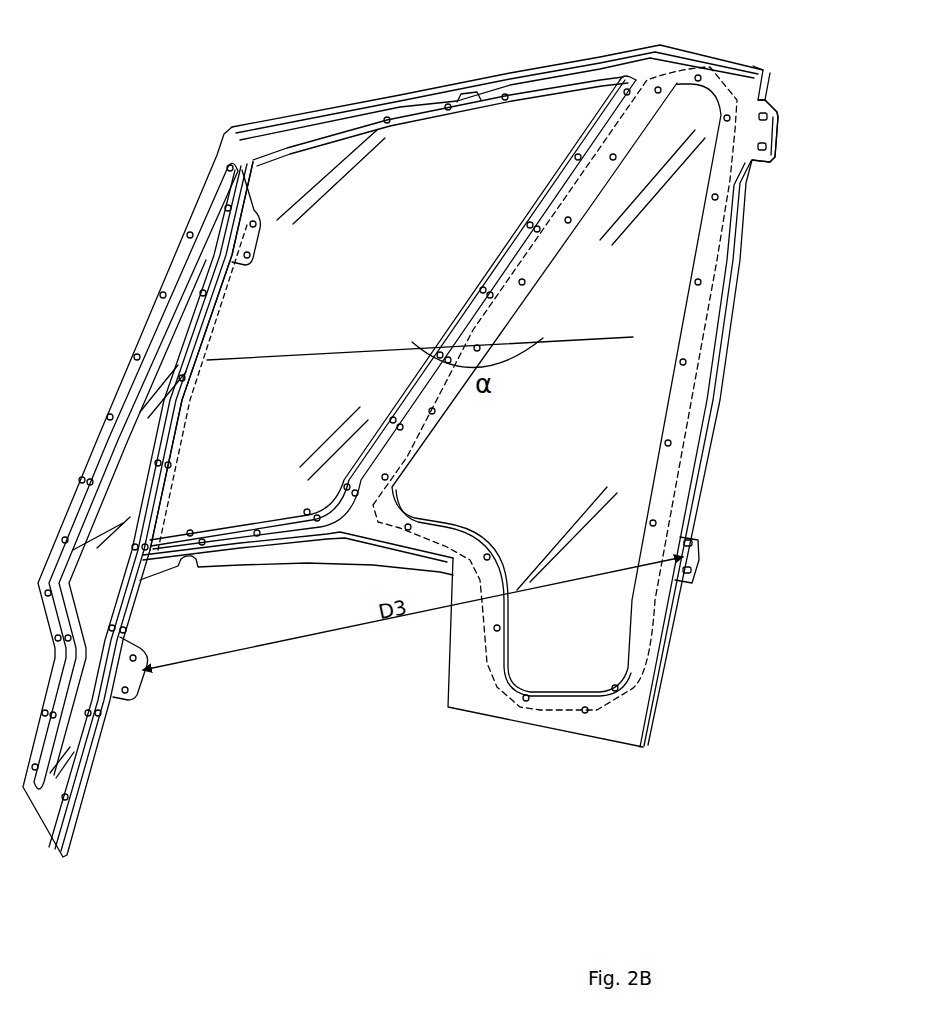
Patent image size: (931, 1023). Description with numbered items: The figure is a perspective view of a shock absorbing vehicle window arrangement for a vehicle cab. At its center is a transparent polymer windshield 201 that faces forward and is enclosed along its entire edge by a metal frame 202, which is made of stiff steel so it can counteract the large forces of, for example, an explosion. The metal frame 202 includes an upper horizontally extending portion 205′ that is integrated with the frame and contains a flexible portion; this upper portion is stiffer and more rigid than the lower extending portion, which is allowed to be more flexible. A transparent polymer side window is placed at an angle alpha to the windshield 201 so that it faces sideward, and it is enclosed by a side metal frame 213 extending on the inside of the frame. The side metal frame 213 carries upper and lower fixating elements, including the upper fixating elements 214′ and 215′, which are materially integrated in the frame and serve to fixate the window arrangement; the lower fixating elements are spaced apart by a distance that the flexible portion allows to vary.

The transparent polymer windshield 201 is at (407, 232).
The metal frame 202 is at (292, 527).
The upper horizontally extending portion 205′ is at (478, 93).
The side metal frame 213 is at (712, 313).
The upper fixating element 214′ is at (250, 238).
The upper fixating element 215′ is at (775, 112).